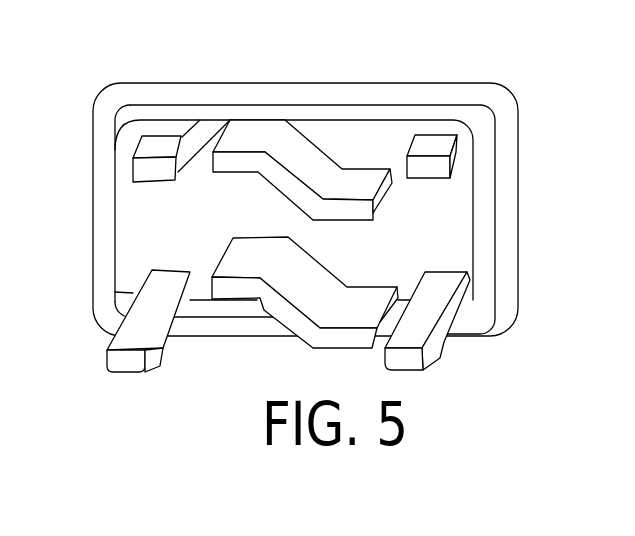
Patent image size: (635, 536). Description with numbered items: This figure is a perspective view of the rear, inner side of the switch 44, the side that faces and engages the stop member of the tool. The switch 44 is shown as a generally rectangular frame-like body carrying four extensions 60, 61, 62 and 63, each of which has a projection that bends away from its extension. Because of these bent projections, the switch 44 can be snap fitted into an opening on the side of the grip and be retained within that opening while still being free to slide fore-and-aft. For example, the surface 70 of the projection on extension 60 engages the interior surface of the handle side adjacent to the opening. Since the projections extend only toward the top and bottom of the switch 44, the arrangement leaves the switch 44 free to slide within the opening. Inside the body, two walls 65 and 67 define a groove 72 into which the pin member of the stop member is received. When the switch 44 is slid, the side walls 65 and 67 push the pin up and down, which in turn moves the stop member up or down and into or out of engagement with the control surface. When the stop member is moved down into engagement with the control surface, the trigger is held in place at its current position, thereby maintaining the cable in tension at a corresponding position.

The switch 44 is at (552, 200).
The groove 72 is at (348, 243).
The wall 67 is at (278, 177).
The extension 62 is at (152, 137).
The extension 63 is at (442, 165).
The wall 65 is at (270, 343).
The extension 60 is at (120, 373).
The surface 70 is at (177, 344).
The extension 61 is at (412, 375).